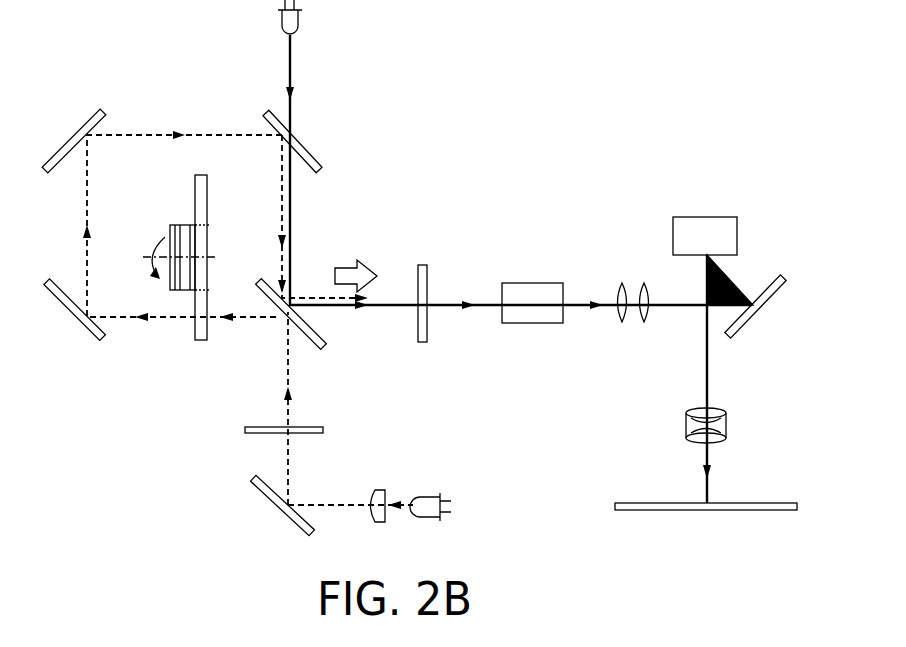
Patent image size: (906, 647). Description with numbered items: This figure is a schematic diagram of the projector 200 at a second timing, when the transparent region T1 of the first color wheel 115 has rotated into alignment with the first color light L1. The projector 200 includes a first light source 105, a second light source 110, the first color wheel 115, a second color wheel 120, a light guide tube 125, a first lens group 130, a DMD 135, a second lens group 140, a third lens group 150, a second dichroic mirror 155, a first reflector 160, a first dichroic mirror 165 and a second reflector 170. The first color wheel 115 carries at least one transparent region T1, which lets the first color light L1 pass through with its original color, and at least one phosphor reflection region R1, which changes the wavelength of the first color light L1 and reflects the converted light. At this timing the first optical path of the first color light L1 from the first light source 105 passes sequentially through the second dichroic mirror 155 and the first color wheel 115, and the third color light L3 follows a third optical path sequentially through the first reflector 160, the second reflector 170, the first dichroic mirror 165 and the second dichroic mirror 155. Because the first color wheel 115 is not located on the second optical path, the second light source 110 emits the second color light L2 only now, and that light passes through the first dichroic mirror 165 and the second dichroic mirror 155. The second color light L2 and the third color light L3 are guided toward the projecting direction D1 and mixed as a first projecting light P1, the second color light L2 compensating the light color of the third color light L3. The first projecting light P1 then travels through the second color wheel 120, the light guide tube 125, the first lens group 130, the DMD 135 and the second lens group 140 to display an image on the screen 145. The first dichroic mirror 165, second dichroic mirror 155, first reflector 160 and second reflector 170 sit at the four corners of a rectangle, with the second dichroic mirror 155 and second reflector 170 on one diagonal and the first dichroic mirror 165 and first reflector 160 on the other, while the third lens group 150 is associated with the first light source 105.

The projector 200 is at (467, 77).
The first light source 105 is at (428, 497).
The second light source 110 is at (302, 17).
The first color wheel 115 is at (207, 176).
The second color wheel 120 is at (426, 264).
The light guide tube 125 is at (537, 283).
The first lens group 130 is at (724, 334).
The DMD 135 is at (707, 217).
The second lens group 140 is at (726, 414).
The screen 145 is at (774, 503).
The third lens group 150 is at (378, 522).
The second dichroic mirror 155 is at (312, 346).
The first reflector 160 is at (88, 341).
The first dichroic mirror 165 is at (318, 157).
The second reflector 170 is at (103, 113).
The first color light L1 is at (272, 318).
The second color light L2 is at (289, 58).
The third color light L3 is at (305, 298).
The first projecting light P1 is at (393, 304).
The projecting direction D1 is at (355, 265).
The phosphor reflection region R1 is at (200, 212).
The transparent region T1 is at (207, 334).